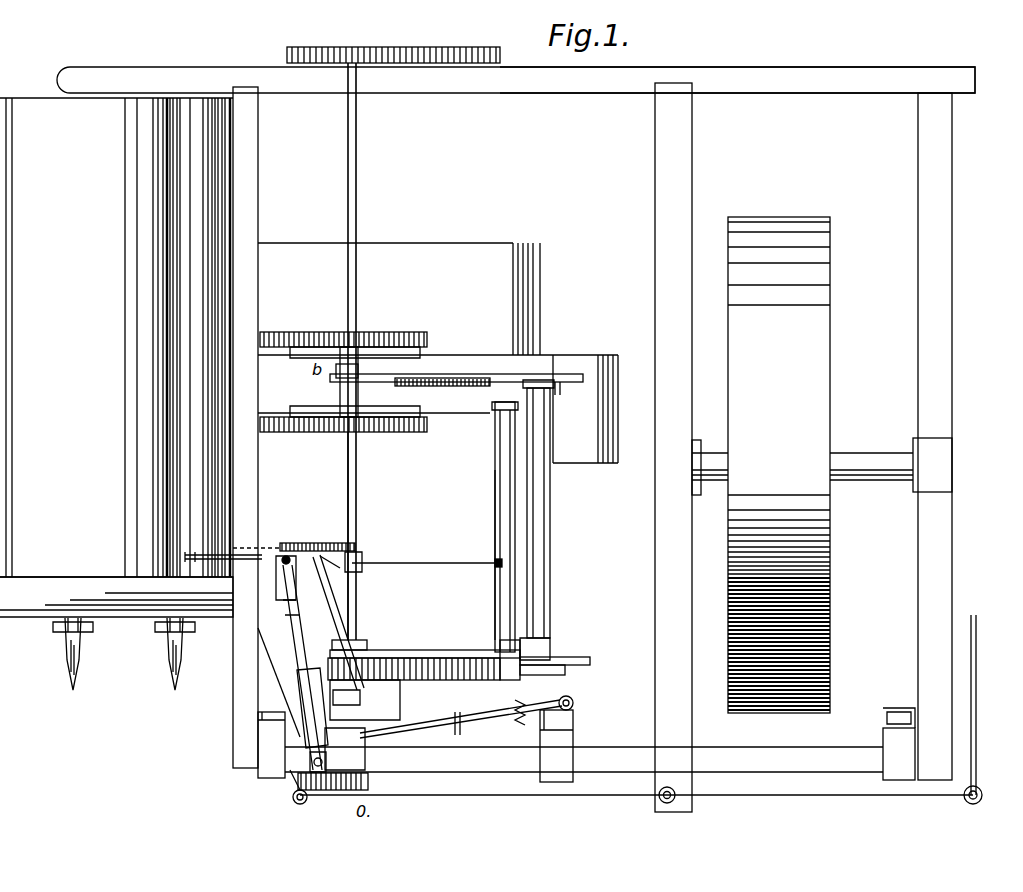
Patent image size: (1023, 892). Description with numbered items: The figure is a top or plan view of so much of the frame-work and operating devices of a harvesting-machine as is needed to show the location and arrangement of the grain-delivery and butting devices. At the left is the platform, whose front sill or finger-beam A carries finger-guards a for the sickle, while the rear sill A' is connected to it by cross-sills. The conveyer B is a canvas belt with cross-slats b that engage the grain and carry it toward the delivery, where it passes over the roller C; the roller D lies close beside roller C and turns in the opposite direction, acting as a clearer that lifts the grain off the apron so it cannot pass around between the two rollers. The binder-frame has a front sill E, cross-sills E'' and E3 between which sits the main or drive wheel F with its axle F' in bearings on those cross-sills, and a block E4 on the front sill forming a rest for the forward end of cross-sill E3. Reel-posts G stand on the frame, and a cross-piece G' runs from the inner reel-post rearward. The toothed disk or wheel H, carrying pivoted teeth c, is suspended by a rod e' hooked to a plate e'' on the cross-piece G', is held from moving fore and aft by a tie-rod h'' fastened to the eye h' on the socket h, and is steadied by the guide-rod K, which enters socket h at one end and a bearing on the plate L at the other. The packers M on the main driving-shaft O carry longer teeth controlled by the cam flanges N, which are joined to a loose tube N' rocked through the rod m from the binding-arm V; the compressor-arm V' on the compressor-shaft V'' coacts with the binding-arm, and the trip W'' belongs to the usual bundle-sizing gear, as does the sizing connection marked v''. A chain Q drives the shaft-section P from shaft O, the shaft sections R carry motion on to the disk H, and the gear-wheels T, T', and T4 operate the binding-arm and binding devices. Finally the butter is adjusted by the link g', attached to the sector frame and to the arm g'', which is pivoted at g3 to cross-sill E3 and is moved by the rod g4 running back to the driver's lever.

The front sill or finger-beam A is at (116, 597).
The rear sill A' is at (516, 80).
The finger-guards a is at (130, 654).
The conveyer B is at (116, 337).
The cross-slats b is at (60, 337).
The roller C is at (161, 337).
The roller D is at (209, 337).
The front sill of the binder-frame E is at (584, 759).
The cross-sill E3 is at (673, 447).
The block E4 is at (737, 80).
The cross-sill E'' is at (932, 436).
The main or drive wheel F is at (779, 465).
The axle F' is at (802, 457).
The reel-posts G is at (586, 745).
The cross-piece G' is at (245, 427).
The rod or link g' is at (279, 682).
The arm or rod g'' is at (633, 804).
The pivot g3 is at (668, 785).
The rod or link g4 is at (985, 709).
The disk or wheel H is at (279, 578).
The socket or tubular head h is at (332, 572).
The eye or ear h' is at (363, 557).
The tie-rod h'' is at (427, 554).
The guide-rod K is at (338, 622).
The plate L is at (357, 749).
The packers M is at (343, 380).
The rod or bar m is at (442, 373).
The flanges N is at (355, 380).
The tube or bearing N' is at (342, 382).
The main driving-shaft O is at (358, 536).
The shaft-section P is at (312, 794).
The chain Q is at (345, 783).
The shaft section R is at (300, 667).
The gear-wheel T is at (424, 648).
The gear-wheel T' is at (563, 667).
The bracket T4 is at (468, 656).
The binding-arm V is at (456, 369).
The compressor-arm V' is at (534, 521).
The compressor-shaft V'' is at (557, 520).
The rod v'' is at (485, 555).
The frame W'' is at (451, 709).
The teeth c is at (223, 547).
The rod e' is at (317, 529).
The plate e'' is at (257, 529).